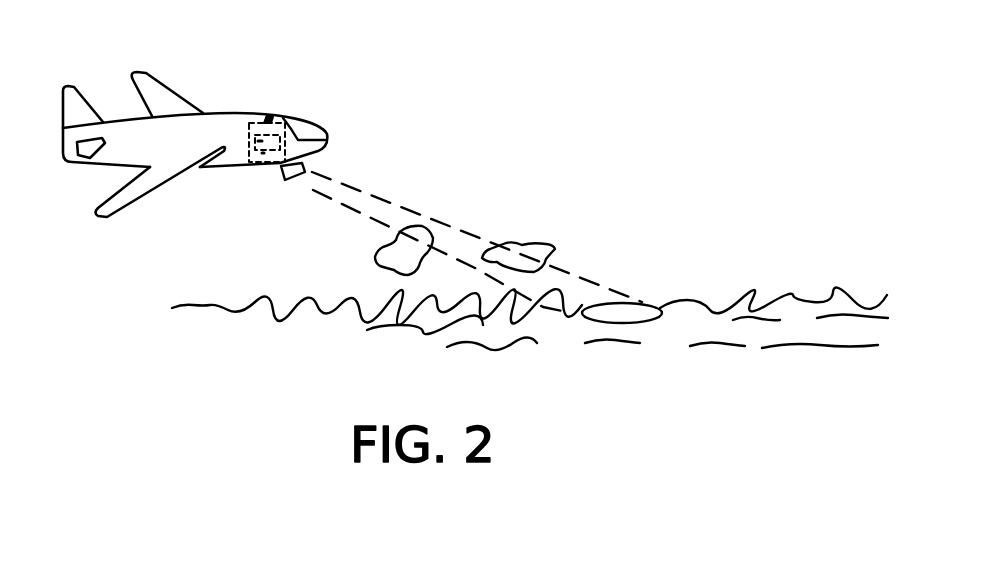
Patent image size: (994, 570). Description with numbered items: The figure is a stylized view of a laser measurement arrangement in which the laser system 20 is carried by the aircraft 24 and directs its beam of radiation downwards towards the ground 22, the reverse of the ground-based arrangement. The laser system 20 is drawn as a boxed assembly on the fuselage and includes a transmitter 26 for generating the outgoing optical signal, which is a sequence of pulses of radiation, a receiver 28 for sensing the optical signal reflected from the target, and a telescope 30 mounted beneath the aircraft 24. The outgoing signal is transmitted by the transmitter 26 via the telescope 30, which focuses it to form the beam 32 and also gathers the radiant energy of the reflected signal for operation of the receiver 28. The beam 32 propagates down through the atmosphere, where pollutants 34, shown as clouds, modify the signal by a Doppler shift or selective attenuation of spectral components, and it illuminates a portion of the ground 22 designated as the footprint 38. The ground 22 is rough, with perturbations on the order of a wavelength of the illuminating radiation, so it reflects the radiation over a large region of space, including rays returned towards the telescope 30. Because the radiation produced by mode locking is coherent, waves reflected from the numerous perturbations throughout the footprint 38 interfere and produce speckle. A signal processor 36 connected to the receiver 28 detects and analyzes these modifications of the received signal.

The laser system 20 is at (270, 121).
The ground 22 is at (752, 300).
The aircraft 24 is at (85, 96).
The transmitter 26 is at (285, 131).
The receiver 28 is at (245, 162).
The telescope 30 is at (288, 178).
The beam 32 is at (427, 212).
The pollutants 34 is at (551, 247).
The signal processor 36 is at (252, 126).
The footprint 38 is at (650, 322).